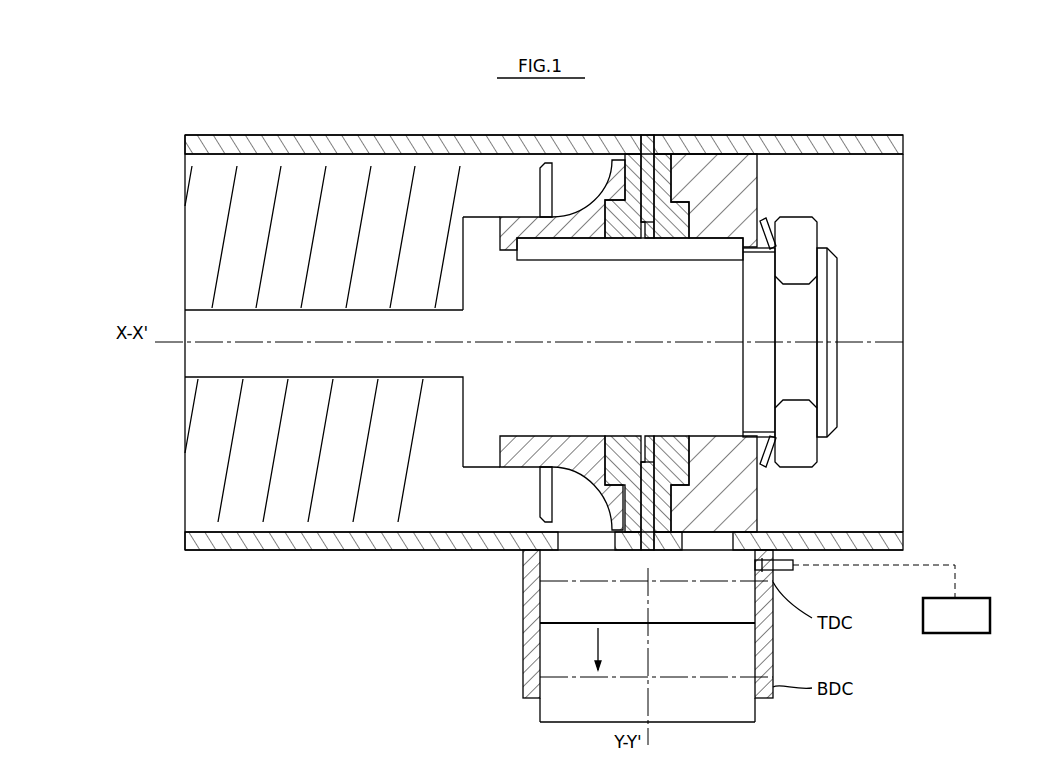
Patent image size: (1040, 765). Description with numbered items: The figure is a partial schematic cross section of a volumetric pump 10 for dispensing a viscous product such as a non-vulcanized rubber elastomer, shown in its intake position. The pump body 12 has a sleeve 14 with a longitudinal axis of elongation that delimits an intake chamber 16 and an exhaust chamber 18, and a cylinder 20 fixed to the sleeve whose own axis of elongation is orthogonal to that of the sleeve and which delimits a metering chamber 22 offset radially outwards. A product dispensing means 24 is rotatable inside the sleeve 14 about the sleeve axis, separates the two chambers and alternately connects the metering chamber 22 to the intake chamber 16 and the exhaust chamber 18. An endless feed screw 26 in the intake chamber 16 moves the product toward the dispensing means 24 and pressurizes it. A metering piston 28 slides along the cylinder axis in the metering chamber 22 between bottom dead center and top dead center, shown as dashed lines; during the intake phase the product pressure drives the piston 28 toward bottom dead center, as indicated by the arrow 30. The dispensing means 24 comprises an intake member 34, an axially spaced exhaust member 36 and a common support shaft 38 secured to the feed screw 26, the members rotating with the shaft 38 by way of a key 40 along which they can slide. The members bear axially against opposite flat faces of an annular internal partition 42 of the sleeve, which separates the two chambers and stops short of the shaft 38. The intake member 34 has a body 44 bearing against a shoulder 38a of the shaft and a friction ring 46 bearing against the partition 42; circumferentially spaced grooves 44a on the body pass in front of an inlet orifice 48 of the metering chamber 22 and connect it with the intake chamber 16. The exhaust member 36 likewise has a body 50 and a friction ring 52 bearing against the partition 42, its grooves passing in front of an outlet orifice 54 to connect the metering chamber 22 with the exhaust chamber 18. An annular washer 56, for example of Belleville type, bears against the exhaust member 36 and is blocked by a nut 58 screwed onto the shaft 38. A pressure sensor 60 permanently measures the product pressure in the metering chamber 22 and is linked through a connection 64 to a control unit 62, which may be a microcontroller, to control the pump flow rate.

The volumetric pump 10 is at (897, 132).
The pump body 12 is at (314, 562).
The sleeve 14 is at (253, 543).
The intake chamber 16 is at (426, 501).
The exhaust chamber 18 is at (857, 448).
The cylinder 20 is at (773, 658).
The metering chamber 22 is at (692, 607).
The product dispensing means 24 is at (506, 490).
The feed screw 26 is at (273, 193).
The product metering piston 28 is at (717, 705).
The arrow 30 is at (598, 642).
The intake member 34 is at (536, 477).
The exhaust member 36 is at (765, 492).
The common support shaft 38 is at (597, 310).
The shoulder 38a is at (478, 233).
The key 40 is at (723, 252).
The internal partition 42 is at (651, 180).
The body 44 is at (560, 172).
The grooves 44a is at (565, 210).
The friction ring 46 is at (634, 184).
The inlet orifice 48 is at (553, 533).
The body 50 is at (745, 162).
The friction ring 52 is at (666, 172).
The outlet orifice 54 is at (712, 512).
The annular washer 56 is at (775, 460).
The nut 58 is at (797, 372).
The pressure sensor 60 is at (773, 570).
The control unit 62 is at (945, 625).
The connection 64 is at (877, 565).